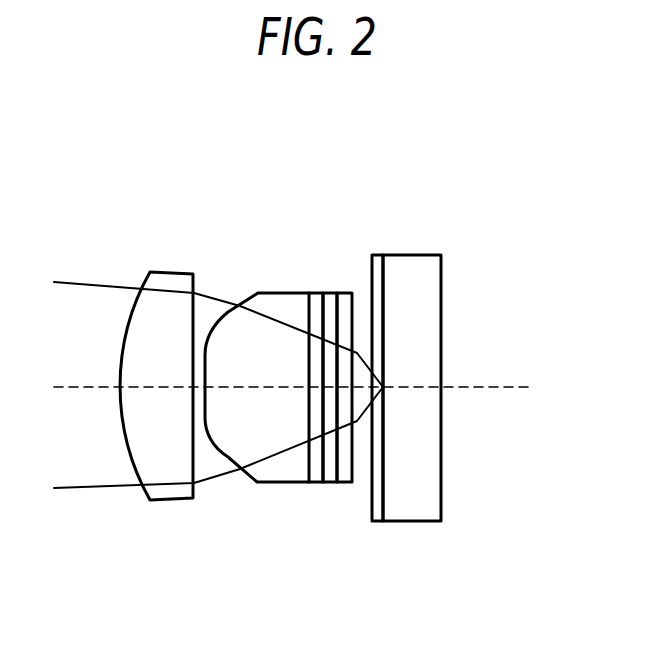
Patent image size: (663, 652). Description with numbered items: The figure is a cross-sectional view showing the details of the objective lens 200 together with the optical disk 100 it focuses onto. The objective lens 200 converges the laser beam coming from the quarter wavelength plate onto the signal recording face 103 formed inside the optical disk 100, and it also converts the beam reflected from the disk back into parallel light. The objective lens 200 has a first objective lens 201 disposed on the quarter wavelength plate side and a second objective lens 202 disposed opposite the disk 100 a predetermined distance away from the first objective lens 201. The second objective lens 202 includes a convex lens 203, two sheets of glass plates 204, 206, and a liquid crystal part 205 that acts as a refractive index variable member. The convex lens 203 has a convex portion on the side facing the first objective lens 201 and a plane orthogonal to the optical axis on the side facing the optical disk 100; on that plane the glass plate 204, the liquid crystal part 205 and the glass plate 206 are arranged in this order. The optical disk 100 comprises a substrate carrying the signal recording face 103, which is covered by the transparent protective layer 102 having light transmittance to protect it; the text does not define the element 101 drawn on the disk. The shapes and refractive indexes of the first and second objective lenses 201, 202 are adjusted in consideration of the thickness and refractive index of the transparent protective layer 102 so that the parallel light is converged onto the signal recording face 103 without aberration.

The optical disk 100 is at (422, 217).
The sensor substrate 101 is at (418, 300).
The transparent protective layer 102 is at (374, 502).
The signal recording face 103 is at (383, 461).
The objective lens 200 is at (202, 211).
The first objective lens 201 is at (170, 492).
The second objective lens 202 is at (298, 492).
The convex lens 203 is at (258, 483).
The glass plate 204 is at (315, 297).
The liquid crystal part 205 is at (332, 297).
The glass plate 206 is at (345, 297).